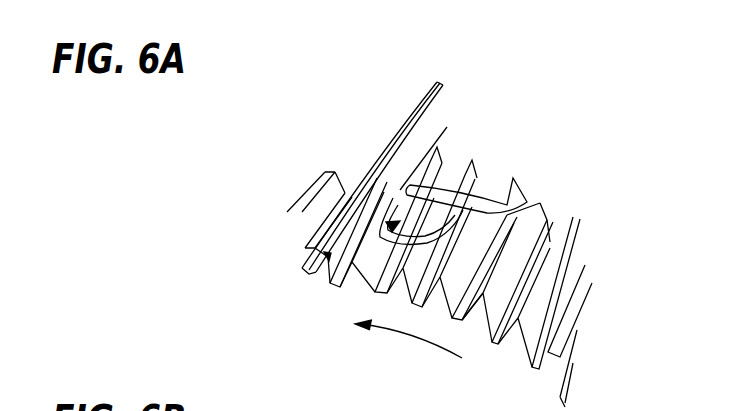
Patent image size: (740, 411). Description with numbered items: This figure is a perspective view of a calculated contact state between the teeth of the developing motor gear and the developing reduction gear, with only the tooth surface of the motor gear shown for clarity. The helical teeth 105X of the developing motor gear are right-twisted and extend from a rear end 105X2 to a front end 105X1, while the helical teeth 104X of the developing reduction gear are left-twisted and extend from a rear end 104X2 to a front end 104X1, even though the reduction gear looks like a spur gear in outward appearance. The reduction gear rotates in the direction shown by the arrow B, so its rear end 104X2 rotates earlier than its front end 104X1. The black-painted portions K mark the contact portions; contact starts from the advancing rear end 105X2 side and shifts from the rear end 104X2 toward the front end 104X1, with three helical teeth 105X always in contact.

The helical teeth 104X is at (530, 243).
The front end 104X1 is at (480, 303).
The rear end 104X2 is at (525, 203).
The helical teeth 105X is at (410, 106).
The front end 105X1 is at (317, 265).
The rear end 105X2 is at (493, 60).
The contact portion K is at (328, 257).
The arrow B is at (408, 346).